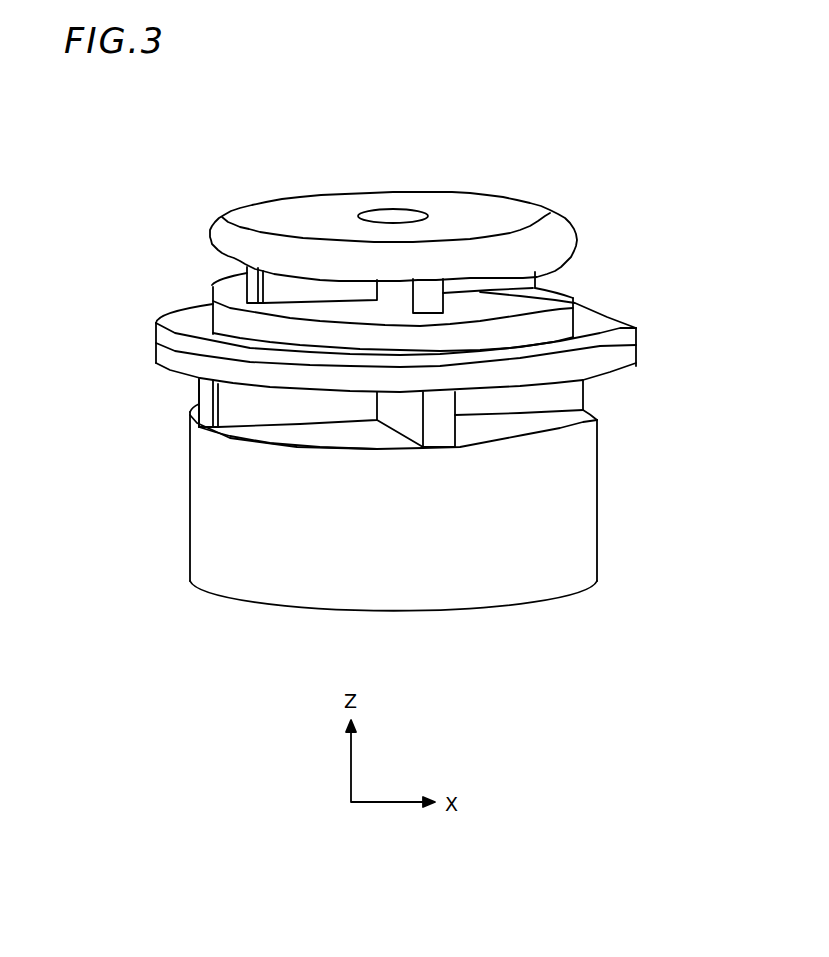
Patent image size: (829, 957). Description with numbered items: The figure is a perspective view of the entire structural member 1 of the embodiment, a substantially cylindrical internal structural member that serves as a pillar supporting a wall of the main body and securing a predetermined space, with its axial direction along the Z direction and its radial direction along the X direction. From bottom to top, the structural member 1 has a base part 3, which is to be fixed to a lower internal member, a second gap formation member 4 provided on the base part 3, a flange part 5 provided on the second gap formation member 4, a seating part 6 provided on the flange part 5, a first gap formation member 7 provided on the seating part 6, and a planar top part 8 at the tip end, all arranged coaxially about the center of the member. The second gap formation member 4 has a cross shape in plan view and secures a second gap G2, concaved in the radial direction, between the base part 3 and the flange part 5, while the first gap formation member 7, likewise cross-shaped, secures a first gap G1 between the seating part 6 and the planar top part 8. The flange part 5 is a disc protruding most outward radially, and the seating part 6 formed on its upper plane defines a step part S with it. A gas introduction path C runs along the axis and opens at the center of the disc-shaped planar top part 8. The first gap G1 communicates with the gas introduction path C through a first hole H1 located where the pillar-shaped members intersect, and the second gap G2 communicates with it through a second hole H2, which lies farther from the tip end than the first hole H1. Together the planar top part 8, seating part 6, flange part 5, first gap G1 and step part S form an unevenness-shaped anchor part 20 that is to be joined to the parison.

The structural member 1 is at (556, 147).
The base part 3 is at (600, 510).
The second gap formation member 4 is at (200, 397).
The flange part 5 is at (150, 343).
The seating part 6 is at (222, 305).
The first gap formation member 7 is at (535, 273).
The planar top part 8 is at (279, 212).
The anchor part 20 is at (710, 205).
The gas introduction path C is at (398, 213).
The first gap G1 is at (520, 295).
The second gap G2 is at (550, 423).
The first hole H1 is at (413, 313).
The second hole H2 is at (403, 417).
The step part S is at (557, 328).